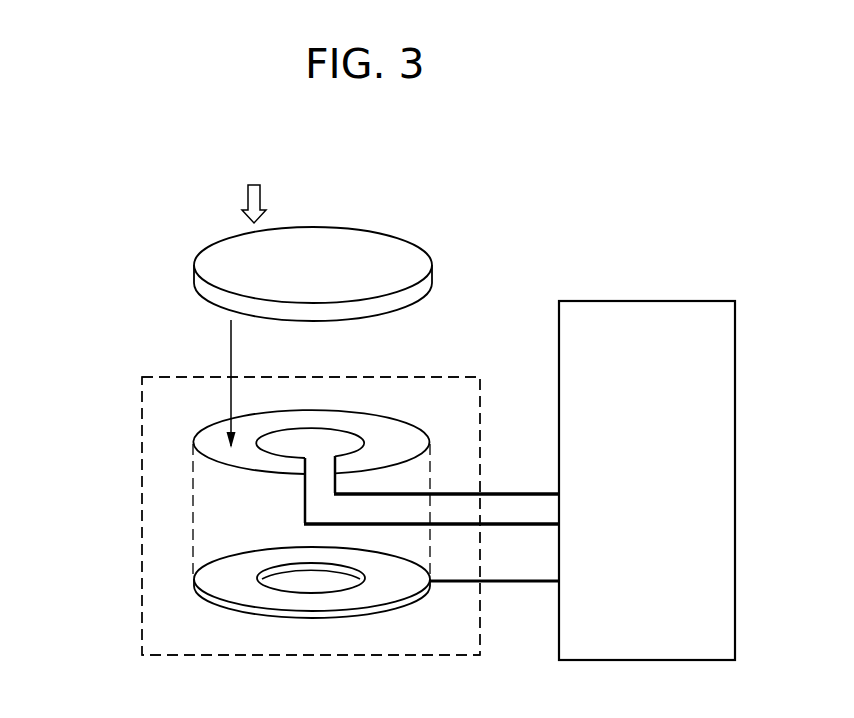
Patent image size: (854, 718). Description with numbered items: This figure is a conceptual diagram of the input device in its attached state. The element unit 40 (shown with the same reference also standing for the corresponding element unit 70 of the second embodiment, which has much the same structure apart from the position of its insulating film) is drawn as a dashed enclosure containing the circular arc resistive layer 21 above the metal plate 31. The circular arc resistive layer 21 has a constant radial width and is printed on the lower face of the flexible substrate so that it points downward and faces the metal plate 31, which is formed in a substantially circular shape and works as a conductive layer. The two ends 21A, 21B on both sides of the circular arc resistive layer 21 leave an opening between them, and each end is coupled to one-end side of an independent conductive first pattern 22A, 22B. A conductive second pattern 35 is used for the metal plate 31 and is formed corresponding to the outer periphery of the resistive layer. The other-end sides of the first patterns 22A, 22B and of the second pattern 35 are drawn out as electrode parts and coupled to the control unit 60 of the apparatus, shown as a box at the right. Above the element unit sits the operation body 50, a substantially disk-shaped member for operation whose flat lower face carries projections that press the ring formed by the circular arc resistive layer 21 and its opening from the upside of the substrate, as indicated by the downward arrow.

The operation body 50 is at (353, 242).
The control unit 60 is at (672, 317).
The element unit 40 is at (158, 389).
The element unit 70 is at (311, 516).
The circular arc resistive layer 21 is at (211, 448).
The end of circular arc resistive layer 21A is at (293, 465).
The end of circular arc resistive layer 21B is at (345, 465).
The first pattern 22A is at (503, 527).
The first pattern 22B is at (505, 492).
The second pattern 35 is at (500, 583).
The metal plate 31 is at (231, 595).